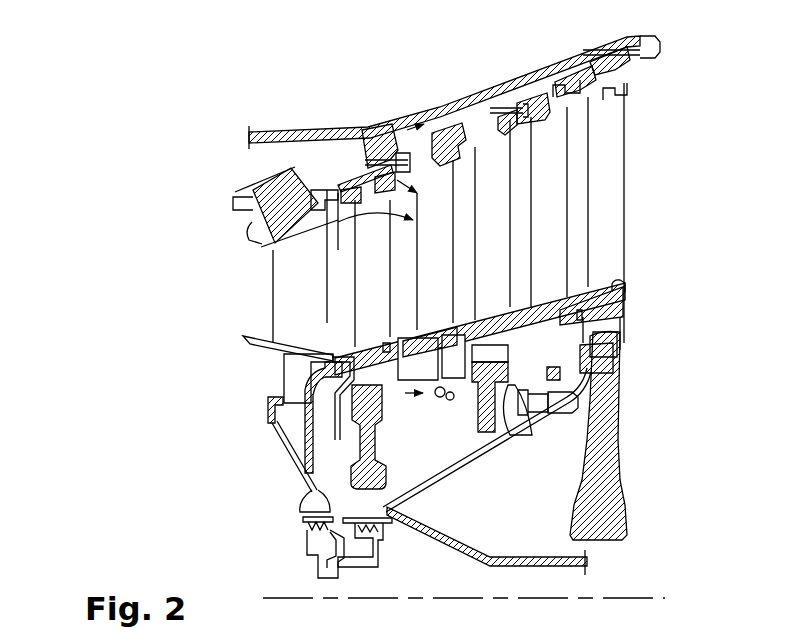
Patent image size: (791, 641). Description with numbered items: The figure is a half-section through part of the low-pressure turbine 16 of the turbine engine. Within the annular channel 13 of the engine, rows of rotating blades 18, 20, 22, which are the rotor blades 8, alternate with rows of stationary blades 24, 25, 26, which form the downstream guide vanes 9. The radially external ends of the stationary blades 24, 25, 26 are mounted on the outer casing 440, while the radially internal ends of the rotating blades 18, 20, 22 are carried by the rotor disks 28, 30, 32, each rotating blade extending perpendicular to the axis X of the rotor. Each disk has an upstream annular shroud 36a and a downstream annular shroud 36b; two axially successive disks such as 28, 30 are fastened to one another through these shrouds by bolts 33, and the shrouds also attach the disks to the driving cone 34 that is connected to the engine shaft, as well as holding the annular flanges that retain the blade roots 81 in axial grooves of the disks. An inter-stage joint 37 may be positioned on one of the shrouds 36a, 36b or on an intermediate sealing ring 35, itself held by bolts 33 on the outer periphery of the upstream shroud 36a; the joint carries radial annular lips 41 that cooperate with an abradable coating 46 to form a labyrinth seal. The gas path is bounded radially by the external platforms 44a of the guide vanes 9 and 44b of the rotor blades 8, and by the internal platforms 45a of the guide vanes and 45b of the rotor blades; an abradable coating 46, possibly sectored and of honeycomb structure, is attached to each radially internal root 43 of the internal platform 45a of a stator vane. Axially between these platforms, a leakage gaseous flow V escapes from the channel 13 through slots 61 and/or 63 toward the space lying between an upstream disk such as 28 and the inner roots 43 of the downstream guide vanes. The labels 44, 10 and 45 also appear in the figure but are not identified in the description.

The low-pressure turbine 16 is at (214, 100).
The outer casing 44 is at (307, 178).
The outer casing 440 is at (367, 122).
The slot 61 is at (333, 180).
The external platform 44a is at (443, 140).
The external platform 44b is at (495, 133).
The rotor blades 8 is at (632, 100).
The downstream guide vanes 9 is at (562, 187).
The blade tip 10 is at (515, 221).
The channel 13 is at (448, 217).
The row of rotating blades 22 is at (603, 130).
The row of stationary blades 24 is at (312, 303).
The row of rotating blades 18 is at (388, 260).
The row of stationary blades 25 is at (448, 211).
The row of rotating blades 20 is at (502, 273).
The row of stationary blades 26 is at (558, 246).
The radially internal root 43 is at (560, 297).
The internal platform 45b is at (625, 275).
The abradable coating 46 is at (583, 313).
The inter-stage joint 37 is at (590, 343).
The intermediate sealing ring 35 is at (603, 356).
The lips 41 is at (615, 372).
The upstream annular shroud 36a is at (598, 393).
The downstream annular shroud 36b is at (527, 420).
The bolts 33 is at (580, 403).
The rotor disk 32 is at (625, 440).
The sealing plate 45 is at (283, 360).
The slot 63 is at (390, 347).
The internal platform 45a is at (430, 337).
The blade roots 81 is at (333, 427).
The rotor disk 28 is at (373, 470).
The rotor disk 30 is at (490, 445).
The driving cone 34 is at (415, 505).
The axis X is at (277, 598).
The leakage gaseous flow V is at (395, 130).